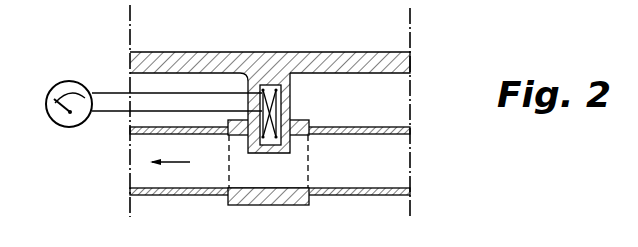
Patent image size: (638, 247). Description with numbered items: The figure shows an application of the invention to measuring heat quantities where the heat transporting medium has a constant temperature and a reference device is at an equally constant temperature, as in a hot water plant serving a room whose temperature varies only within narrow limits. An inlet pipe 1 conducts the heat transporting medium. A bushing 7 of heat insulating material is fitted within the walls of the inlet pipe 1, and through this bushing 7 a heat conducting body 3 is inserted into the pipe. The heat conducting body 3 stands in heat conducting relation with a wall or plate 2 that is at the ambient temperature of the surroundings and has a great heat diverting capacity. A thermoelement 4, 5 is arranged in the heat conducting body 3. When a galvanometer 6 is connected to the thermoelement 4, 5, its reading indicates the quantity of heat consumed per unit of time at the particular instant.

The inlet pipe 1 is at (360, 196).
The wall or plate 2 is at (305, 58).
The heat conducting body 3 is at (290, 105).
The thermoelement 4 is at (234, 113).
The thermoelement 5 is at (250, 101).
The galvanometer 6 is at (57, 127).
The bushing 7 is at (243, 206).